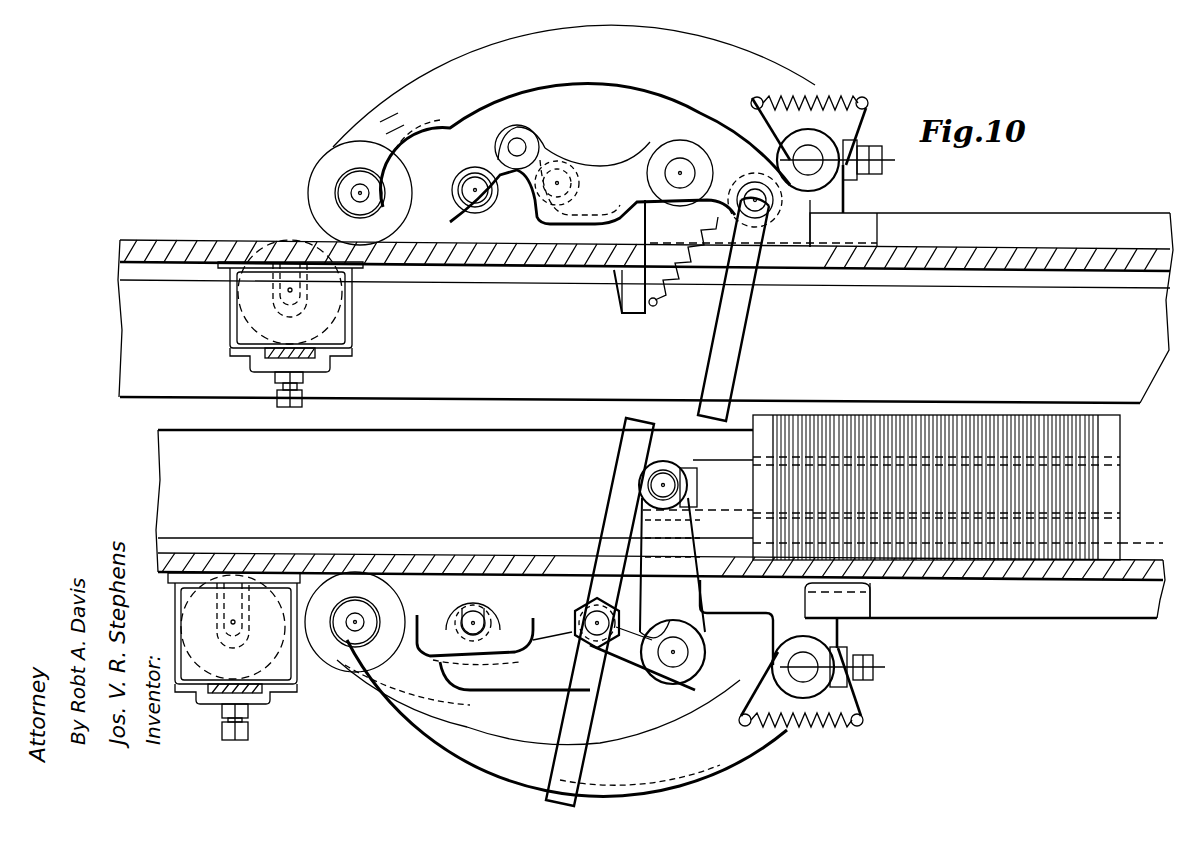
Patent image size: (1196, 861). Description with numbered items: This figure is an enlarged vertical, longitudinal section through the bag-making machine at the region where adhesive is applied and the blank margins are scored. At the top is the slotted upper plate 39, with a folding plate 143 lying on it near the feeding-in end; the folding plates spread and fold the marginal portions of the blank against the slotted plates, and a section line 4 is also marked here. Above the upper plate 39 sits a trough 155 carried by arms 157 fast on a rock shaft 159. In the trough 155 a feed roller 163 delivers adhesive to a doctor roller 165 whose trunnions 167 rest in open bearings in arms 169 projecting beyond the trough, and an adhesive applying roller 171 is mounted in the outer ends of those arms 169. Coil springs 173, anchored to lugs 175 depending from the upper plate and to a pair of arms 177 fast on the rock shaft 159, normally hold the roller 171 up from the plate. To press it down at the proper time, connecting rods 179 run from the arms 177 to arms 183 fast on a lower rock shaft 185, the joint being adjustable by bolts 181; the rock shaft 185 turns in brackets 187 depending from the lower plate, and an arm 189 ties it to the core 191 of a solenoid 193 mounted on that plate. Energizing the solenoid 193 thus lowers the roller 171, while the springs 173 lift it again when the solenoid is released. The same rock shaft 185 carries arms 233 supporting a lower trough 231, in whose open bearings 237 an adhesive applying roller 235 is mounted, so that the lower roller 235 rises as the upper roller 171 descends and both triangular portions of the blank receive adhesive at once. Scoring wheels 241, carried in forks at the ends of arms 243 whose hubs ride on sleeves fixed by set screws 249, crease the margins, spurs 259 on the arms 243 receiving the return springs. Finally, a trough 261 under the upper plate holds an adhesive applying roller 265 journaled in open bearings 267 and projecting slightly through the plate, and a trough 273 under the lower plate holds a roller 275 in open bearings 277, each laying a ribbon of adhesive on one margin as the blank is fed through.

The section line 4- 4 is at (749, 176).
The upper plate 39 is at (1005, 246).
The folding plate 143 is at (1055, 214).
The trough 155 is at (590, 180).
The arm 157 is at (643, 158).
The rock shaft 159 is at (683, 165).
The feed roller 163 is at (566, 152).
The doctor roller 165 is at (522, 128).
The trunnion 167 is at (510, 146).
The arm 169 is at (487, 156).
The adhesive applying roller 171 is at (452, 206).
The coil spring 173 is at (666, 298).
The lug 175 is at (617, 300).
The arm 177 is at (722, 168).
The connecting rod 179 is at (728, 340).
The bolt 181 is at (578, 614).
The arm 183 is at (612, 690).
The rock shaft 185 is at (670, 670).
The bracket 187 is at (712, 632).
The arm 189 is at (686, 528).
The core 191 is at (717, 478).
The solenoid 193 is at (812, 416).
The trough 231 is at (508, 618).
The arm 233 is at (515, 688).
The adhesive applying roller 235 is at (470, 606).
The open bearing 237 is at (456, 616).
The scoring wheel 241 is at (320, 186).
The arm 243 is at (445, 76).
The set screw 249 is at (888, 158).
The spur 259 is at (870, 104).
The trough 261 is at (340, 325).
The adhesive applying roller 265 is at (342, 298).
The open bearing 267 is at (316, 302).
The trough 273 is at (281, 672).
The roller 275 is at (240, 576).
The open bearing 277 is at (246, 630).